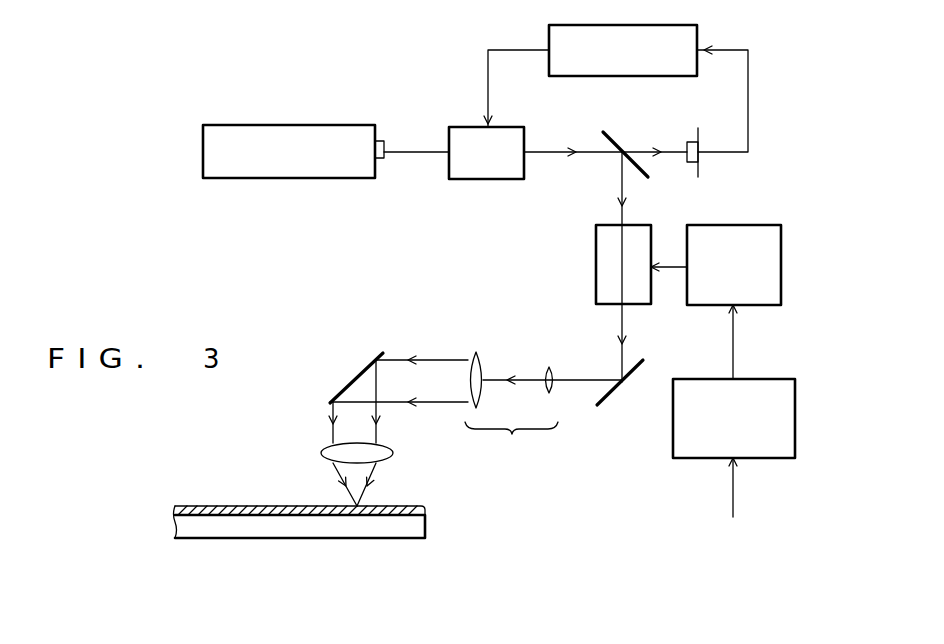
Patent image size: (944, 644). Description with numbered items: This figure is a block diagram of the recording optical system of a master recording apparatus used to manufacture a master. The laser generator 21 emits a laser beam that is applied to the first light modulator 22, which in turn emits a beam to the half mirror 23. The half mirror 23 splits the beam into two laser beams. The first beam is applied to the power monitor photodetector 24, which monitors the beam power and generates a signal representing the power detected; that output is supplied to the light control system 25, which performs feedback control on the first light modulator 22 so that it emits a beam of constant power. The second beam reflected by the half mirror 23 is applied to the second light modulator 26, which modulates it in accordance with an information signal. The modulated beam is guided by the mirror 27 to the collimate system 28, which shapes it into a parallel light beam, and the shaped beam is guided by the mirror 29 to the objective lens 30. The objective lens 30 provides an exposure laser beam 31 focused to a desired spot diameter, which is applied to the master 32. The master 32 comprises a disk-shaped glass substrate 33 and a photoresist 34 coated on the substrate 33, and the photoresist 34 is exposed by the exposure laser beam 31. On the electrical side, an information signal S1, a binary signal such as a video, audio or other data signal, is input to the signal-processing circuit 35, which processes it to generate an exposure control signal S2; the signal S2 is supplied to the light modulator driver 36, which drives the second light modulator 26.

The laser generator 21 is at (273, 123).
The first light modulator 22 is at (480, 180).
The half mirror 23 is at (613, 137).
The power monitor photodetector 24 is at (700, 145).
The light control system 25 is at (562, 65).
The second light modulator 26 is at (595, 257).
The mirror 27 is at (613, 392).
The collimate system 28 is at (511, 410).
The mirror 29 is at (343, 385).
The objective lens 30 is at (383, 445).
The exposure laser beam 31 is at (338, 482).
The master 32 is at (327, 495).
The glass substrate 33 is at (425, 532).
The photoresist 34 is at (413, 506).
The signal-processing circuit 35 is at (688, 388).
The light modulator driver 36 is at (752, 225).
The information signal S1 is at (733, 500).
The exposure control signal S2 is at (733, 343).